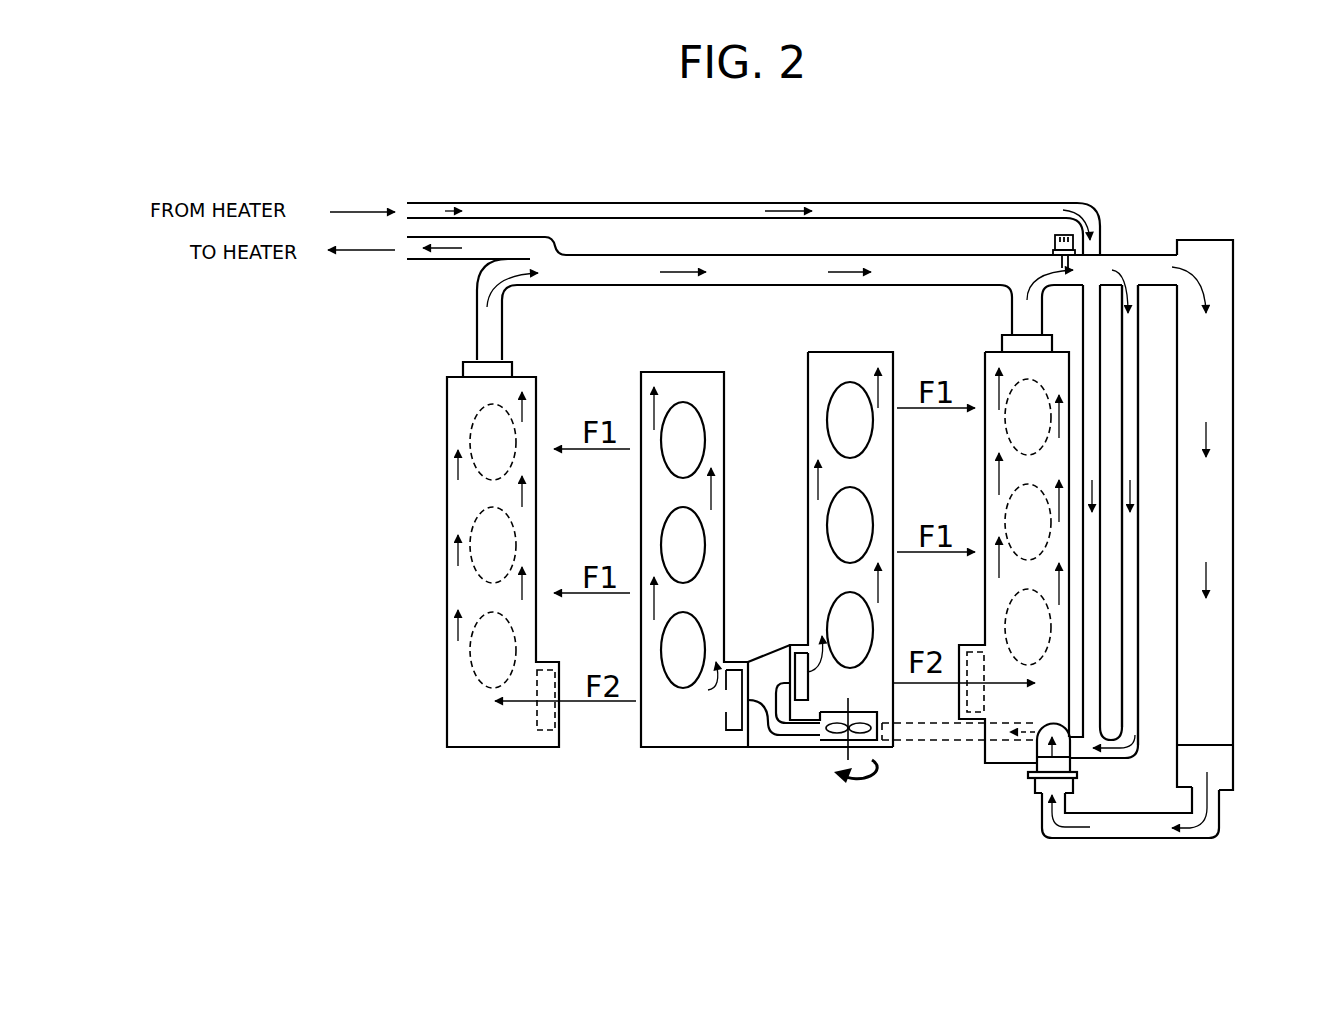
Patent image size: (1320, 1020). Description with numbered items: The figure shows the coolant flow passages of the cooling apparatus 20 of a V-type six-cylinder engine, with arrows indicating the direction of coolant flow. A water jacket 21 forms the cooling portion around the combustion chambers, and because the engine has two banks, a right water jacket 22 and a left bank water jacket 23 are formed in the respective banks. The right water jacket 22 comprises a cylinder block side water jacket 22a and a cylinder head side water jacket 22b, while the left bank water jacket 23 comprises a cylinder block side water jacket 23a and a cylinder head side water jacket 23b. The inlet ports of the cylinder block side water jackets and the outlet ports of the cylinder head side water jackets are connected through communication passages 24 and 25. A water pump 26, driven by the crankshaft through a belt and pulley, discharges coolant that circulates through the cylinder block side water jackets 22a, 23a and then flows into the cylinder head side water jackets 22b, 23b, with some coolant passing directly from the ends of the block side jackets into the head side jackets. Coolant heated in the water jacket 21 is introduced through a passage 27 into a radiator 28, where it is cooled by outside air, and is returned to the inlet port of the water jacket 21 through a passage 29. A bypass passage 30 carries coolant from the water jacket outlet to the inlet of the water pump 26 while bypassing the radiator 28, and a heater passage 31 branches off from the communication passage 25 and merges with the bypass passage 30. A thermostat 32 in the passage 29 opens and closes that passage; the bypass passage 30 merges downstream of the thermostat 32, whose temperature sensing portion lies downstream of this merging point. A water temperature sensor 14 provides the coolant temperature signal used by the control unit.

The cooling apparatus 20 is at (947, 182).
The heater passage 31 is at (734, 203).
The water temperature sensor 14 is at (1055, 235).
The communication passage 25 is at (675, 288).
The passage 27 is at (1125, 255).
The bypass passage 30 is at (1138, 302).
The radiator 28 is at (1236, 766).
The passage 29 is at (1138, 838).
The thermostat 32 is at (1070, 747).
The left bank water jacket 23 is at (535, 609).
The cylinder head side water jacket 23b is at (537, 498).
The cylinder block side water jacket 23a is at (733, 545).
The water jacket 21 is at (767, 632).
The communication passage 24 is at (759, 748).
The water pump 26 is at (822, 748).
The right water jacket 22 is at (906, 606).
The cylinder block side water jacket 22a is at (836, 549).
The cylinder head side water jacket 22b is at (986, 481).